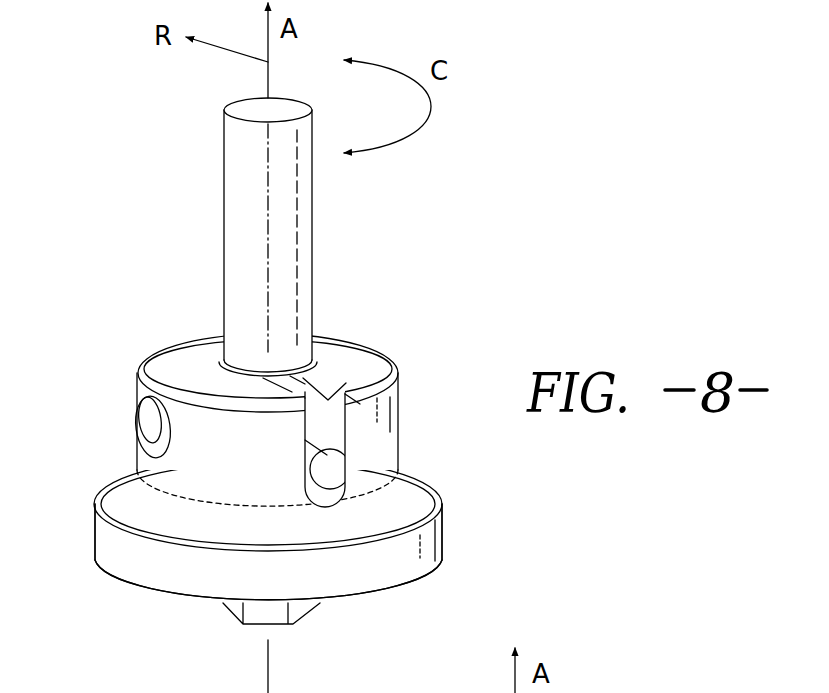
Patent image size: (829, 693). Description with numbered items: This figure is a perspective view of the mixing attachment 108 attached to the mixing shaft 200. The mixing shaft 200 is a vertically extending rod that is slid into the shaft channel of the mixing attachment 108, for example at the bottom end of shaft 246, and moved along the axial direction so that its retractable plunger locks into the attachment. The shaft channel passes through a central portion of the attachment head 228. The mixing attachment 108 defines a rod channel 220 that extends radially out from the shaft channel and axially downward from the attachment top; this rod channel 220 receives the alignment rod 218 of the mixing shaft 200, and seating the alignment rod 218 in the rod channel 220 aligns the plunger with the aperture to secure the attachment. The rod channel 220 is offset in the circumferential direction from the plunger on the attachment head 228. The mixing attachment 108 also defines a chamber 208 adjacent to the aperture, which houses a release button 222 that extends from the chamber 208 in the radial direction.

The mixing attachment 108 is at (94, 517).
The mixing shaft 200 is at (224, 217).
The chamber 208 is at (140, 402).
The alignment rod 218 is at (328, 476).
The rod channel 220 is at (330, 388).
The release button 222 is at (146, 428).
The attachment head 228 is at (442, 526).
The bottom end of shaft 246 is at (304, 606).